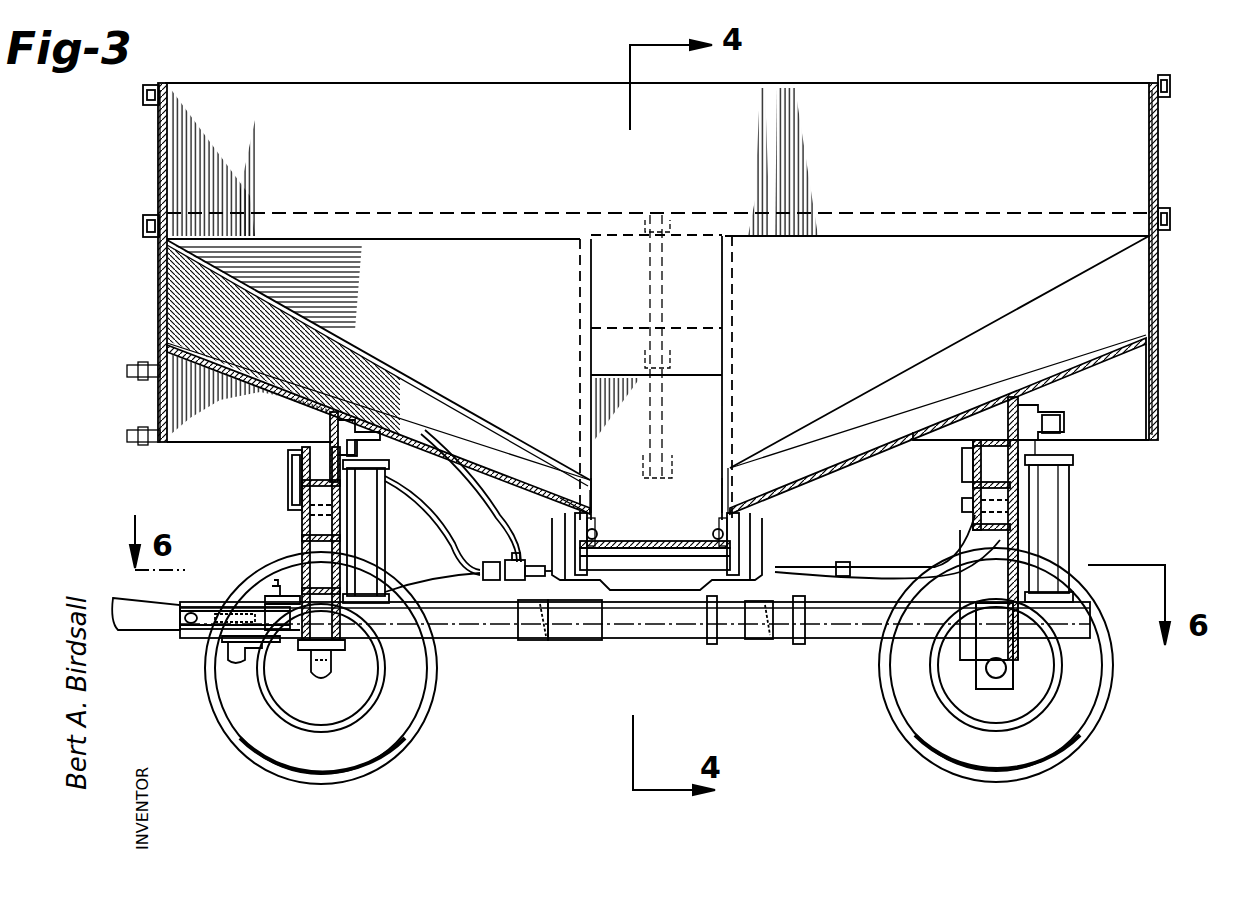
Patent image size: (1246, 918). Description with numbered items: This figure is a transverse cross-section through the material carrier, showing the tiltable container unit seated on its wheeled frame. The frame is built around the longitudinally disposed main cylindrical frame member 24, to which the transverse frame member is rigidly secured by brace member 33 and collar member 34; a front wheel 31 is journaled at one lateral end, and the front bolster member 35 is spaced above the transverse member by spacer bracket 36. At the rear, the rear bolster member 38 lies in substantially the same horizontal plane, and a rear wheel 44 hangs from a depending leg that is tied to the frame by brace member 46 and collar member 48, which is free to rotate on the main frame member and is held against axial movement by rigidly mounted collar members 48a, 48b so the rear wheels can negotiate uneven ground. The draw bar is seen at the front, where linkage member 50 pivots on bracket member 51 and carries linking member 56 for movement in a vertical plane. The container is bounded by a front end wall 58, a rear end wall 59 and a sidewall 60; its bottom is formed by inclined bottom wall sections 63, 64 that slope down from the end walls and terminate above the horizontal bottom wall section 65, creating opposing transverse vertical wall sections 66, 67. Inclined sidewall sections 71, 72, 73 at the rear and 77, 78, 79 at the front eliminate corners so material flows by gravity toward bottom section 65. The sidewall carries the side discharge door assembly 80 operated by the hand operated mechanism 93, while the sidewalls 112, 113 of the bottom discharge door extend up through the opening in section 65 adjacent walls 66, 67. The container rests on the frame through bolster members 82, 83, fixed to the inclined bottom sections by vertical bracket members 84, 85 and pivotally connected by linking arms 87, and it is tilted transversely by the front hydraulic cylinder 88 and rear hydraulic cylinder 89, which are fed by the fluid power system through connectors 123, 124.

The main cylindrical frame member 24 is at (660, 640).
The front wheel 31 is at (424, 728).
The brace member 33 is at (548, 641).
The collar member 34 is at (590, 641).
The front bolster member 35 is at (302, 529).
The spacer bracket 36 is at (302, 553).
The rear bolster member 38 is at (971, 494).
The rear wheel 44 is at (1100, 704).
The brace member 46 is at (798, 644).
The collar member 48 is at (760, 641).
The collar member 48a is at (712, 645).
The collar member 48b is at (820, 598).
The linkage member 50 is at (228, 606).
The bracket member 51 is at (300, 592).
The linking member 56 is at (150, 628).
The front end wall 58 is at (158, 310).
The rear end wall 59 is at (1160, 298).
The sidewall 60 is at (828, 83).
The inclined bottom wall section 63 is at (960, 408).
The inclined bottom wall section 64 is at (312, 388).
The horizontal bottom wall section 65 is at (648, 541).
The transverse vertical wall section 66 is at (592, 530).
The transverse vertical wall section 67 is at (722, 530).
The sidewall section 71 is at (807, 474).
The intermediate sidewall section 72 is at (1033, 349).
The sidewall section 73 is at (900, 292).
The sidewall section 77 is at (561, 489).
The sidewall section 78 is at (422, 410).
The sidewall section 79 is at (475, 320).
The side discharge door assembly 80 is at (712, 422).
The bolster member 82 is at (288, 462).
The bolster member 83 is at (972, 462).
The vertical bracket member 84 is at (328, 427).
The vertical bracket member 85 is at (1006, 426).
The linking arms 87 is at (1072, 473).
The front hydraulic cylinder 88 is at (385, 540).
The rear hydraulic cylinder 89 is at (1060, 520).
The hand operated mechanism 93 is at (661, 306).
The sidewall 112 is at (598, 510).
The sidewall 113 is at (720, 525).
The connector 123 is at (140, 368).
The connector 124 is at (142, 443).